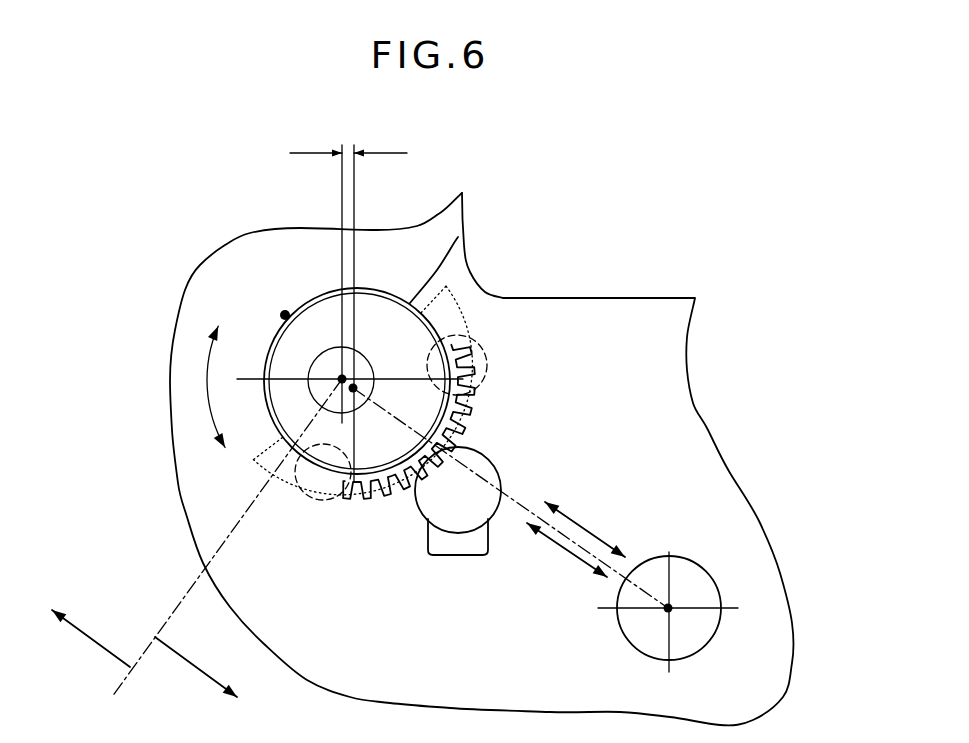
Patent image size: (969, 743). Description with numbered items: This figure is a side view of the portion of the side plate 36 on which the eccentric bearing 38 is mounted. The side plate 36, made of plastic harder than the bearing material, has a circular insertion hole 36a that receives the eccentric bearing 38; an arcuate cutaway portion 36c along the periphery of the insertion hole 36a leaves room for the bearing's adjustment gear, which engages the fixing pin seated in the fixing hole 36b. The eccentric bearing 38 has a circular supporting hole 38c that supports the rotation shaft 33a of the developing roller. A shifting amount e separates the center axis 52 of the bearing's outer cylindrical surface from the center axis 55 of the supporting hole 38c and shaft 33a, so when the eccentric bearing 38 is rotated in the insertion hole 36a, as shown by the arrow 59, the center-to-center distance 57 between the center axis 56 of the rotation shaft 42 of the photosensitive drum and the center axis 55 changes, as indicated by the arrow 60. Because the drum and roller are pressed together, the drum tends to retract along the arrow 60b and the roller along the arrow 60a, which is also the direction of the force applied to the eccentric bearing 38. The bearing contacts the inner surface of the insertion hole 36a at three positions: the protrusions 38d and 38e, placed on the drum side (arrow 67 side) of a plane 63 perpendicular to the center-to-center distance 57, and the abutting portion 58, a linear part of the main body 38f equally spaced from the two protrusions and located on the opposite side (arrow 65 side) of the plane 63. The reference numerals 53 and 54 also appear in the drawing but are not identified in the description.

The side plate 36 is at (637, 298).
The insertion hole 36a is at (462, 232).
The fixing hole 36b is at (460, 555).
The cutaway portion 36c is at (487, 400).
The eccentric bearing 38 is at (487, 417).
The supporting hole 38c is at (326, 360).
The protrusion 38d is at (453, 365).
The protrusion 38e is at (297, 497).
The main body 38f is at (332, 303).
The rotation shaft 33a is at (322, 368).
The center axis 52 is at (355, 387).
The swing range 53 is at (472, 340).
The swing range 54 is at (345, 495).
The center axis 55 is at (318, 385).
The center axis 56 is at (668, 608).
The center-to-center distance 57 is at (520, 502).
The abutting portion 58 is at (285, 315).
The arrow 59 is at (205, 388).
The arrow 60 is at (562, 552).
The arrow 60a is at (565, 508).
The arrow 60b is at (610, 540).
The rotation shaft 42 is at (713, 577).
The plane 63 is at (187, 595).
The arrow 65 is at (72, 625).
The arrow 67 is at (183, 660).
The shifting amount e is at (348, 142).